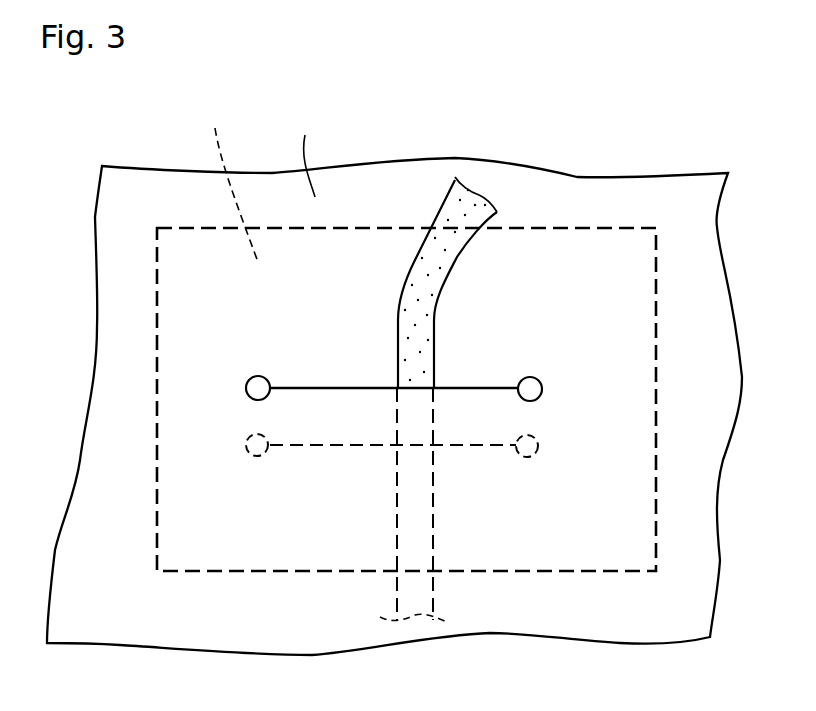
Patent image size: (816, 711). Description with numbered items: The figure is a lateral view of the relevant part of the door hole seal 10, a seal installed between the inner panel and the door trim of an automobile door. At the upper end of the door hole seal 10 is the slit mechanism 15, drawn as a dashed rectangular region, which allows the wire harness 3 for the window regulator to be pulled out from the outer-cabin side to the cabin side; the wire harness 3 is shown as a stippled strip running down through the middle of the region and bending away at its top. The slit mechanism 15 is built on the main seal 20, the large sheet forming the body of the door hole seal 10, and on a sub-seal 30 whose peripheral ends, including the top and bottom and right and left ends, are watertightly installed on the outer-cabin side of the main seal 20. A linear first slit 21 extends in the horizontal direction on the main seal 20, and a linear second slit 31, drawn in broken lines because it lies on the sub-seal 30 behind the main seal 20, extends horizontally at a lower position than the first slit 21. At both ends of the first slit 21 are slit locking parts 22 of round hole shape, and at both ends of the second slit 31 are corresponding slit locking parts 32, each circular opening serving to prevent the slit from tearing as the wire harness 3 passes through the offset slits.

The wire harness 3 is at (402, 292).
The door hole seal 10 is at (595, 170).
The slit mechanism 15 is at (532, 216).
The main seal 20 is at (308, 151).
The first slit 21 is at (334, 387).
The slit locking parts 22 is at (250, 380).
The sub-seal 30 is at (227, 179).
The second slit 31 is at (337, 447).
The slit locking parts 32 is at (257, 456).